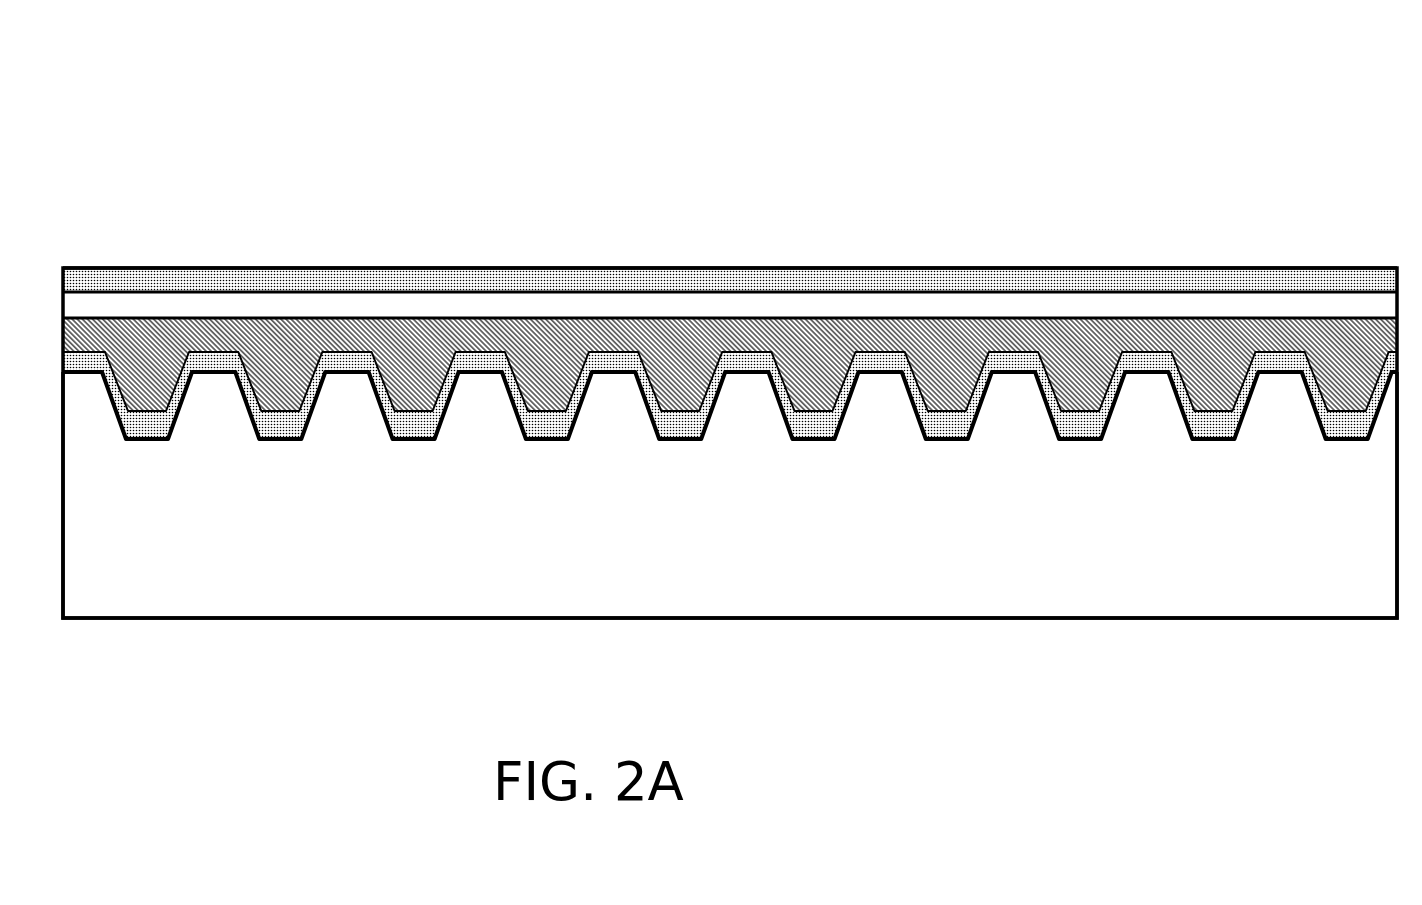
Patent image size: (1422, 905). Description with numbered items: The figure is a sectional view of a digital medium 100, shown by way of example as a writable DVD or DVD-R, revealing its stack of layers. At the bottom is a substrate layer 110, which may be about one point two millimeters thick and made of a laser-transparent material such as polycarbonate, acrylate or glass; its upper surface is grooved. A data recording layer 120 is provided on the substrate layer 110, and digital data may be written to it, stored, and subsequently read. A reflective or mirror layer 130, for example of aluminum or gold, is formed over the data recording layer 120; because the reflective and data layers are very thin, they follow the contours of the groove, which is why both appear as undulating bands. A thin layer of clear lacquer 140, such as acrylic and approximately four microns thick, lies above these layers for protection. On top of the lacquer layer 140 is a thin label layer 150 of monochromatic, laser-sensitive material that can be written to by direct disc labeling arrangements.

The medium 100 is at (1042, 188).
The substrate layer 110 is at (1133, 575).
The data recording layer 120 is at (1212, 437).
The reflective layer 130 is at (1290, 328).
The lacquer layer 140 is at (1207, 302).
The label layer 150 is at (1123, 268).